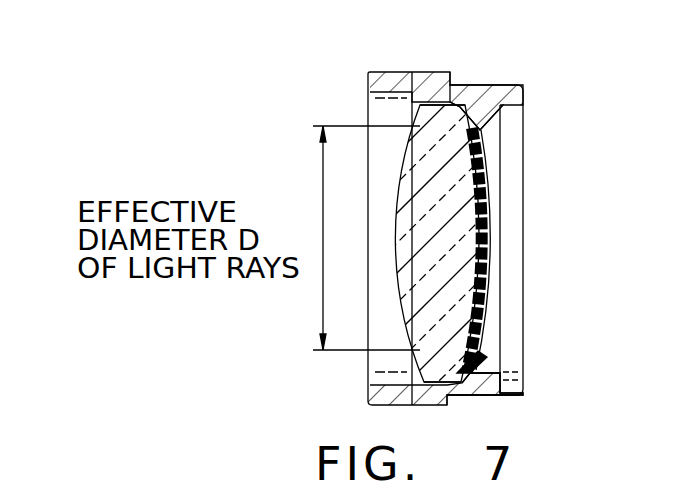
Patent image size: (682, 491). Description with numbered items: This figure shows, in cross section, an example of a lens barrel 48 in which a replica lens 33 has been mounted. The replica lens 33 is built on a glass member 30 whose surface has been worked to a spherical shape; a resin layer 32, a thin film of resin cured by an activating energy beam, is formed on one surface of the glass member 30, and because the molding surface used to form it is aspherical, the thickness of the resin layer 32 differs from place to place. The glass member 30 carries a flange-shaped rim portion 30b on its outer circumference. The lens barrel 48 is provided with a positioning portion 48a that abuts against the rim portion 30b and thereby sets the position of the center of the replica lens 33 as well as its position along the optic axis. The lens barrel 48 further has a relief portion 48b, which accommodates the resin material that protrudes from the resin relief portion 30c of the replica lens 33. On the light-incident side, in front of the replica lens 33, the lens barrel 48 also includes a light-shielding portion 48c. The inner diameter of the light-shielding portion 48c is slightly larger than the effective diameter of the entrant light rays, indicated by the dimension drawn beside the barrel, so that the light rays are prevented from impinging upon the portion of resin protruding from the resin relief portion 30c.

The lens barrel 48 is at (430, 72).
The positioning portion 48a is at (490, 395).
The relief portion 48b is at (466, 100).
The light-shielding portion 48c is at (480, 362).
The glass member 30 is at (472, 242).
The rim portion 30b is at (422, 381).
The resin relief portion 30c is at (487, 102).
The resin layer 32 is at (491, 200).
The replica lens 33 is at (493, 150).